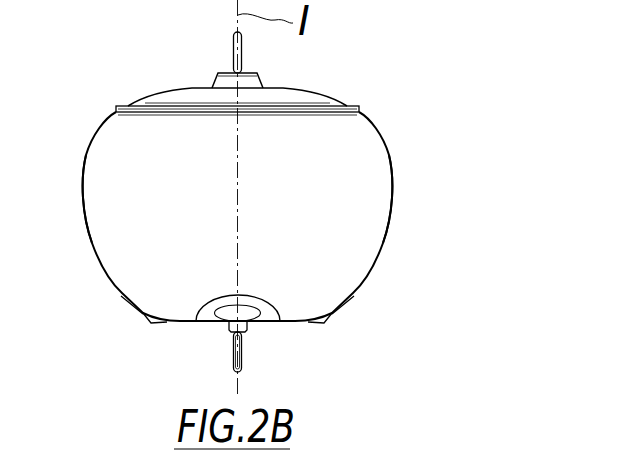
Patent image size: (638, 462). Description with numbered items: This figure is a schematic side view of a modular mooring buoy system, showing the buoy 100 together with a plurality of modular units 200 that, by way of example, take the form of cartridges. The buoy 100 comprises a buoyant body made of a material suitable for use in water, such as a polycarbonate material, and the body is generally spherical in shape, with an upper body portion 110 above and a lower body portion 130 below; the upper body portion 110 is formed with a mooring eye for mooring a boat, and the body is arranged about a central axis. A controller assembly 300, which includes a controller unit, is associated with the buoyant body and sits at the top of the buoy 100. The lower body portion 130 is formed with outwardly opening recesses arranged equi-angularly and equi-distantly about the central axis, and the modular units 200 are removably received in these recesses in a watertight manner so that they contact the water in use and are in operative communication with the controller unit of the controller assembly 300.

The controller assembly 300 is at (317, 90).
The buoy 100 is at (316, 213).
The upper body portion 110 is at (370, 172).
The lower body portion 130 is at (363, 265).
The modular units 200 is at (154, 328).